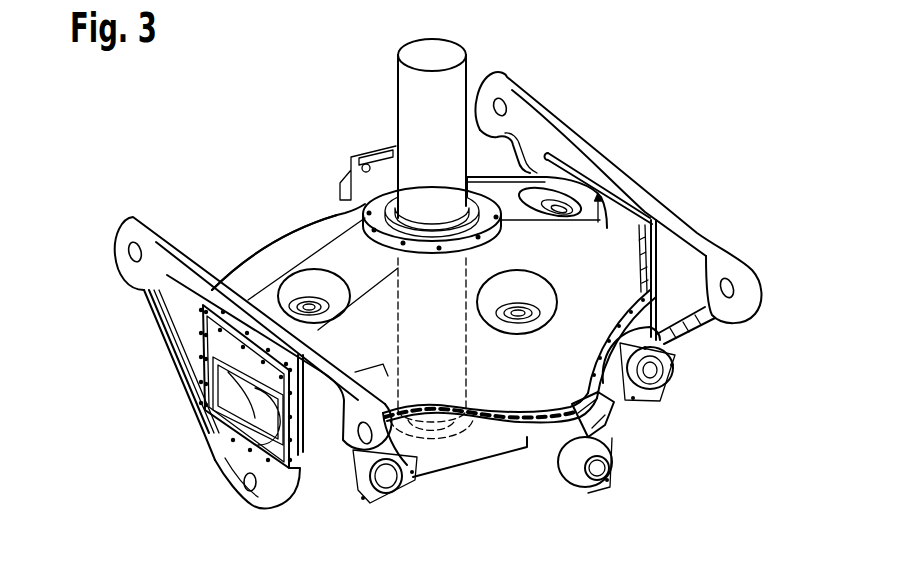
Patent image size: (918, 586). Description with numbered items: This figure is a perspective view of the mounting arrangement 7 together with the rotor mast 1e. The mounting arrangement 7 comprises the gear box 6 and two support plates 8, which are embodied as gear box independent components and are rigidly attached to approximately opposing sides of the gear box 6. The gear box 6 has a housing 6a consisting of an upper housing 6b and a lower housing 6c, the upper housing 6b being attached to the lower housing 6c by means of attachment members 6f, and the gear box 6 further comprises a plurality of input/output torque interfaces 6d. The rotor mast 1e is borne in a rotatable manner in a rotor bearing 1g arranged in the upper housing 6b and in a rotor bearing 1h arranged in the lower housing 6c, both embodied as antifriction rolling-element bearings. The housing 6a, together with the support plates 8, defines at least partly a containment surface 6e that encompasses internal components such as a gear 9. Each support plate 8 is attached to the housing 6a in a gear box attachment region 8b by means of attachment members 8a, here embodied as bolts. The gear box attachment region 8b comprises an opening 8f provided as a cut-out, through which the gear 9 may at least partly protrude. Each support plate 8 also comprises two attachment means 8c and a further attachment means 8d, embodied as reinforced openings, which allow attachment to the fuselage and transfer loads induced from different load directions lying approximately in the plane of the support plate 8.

The mounting arrangement 7 is at (176, 125).
The rotor mast 1e is at (406, 88).
The rotor bearing 1g is at (365, 205).
The rotor bearing 1h is at (438, 430).
The gear box 6 is at (514, 465).
The housing 6a is at (527, 447).
The upper housing 6b is at (610, 250).
The lower housing 6c is at (490, 465).
The input/output torque interfaces 6d is at (662, 387).
The containment surface 6e is at (284, 243).
The attachment members 6f is at (675, 358).
The support plate 8 is at (600, 150).
The attachment members 8a is at (230, 438).
The gear box attachment region 8b is at (549, 166).
The attachment means 8c is at (128, 252).
The further attachment means 8d is at (248, 487).
The opening 8f is at (608, 245).
The gear 9 is at (256, 422).